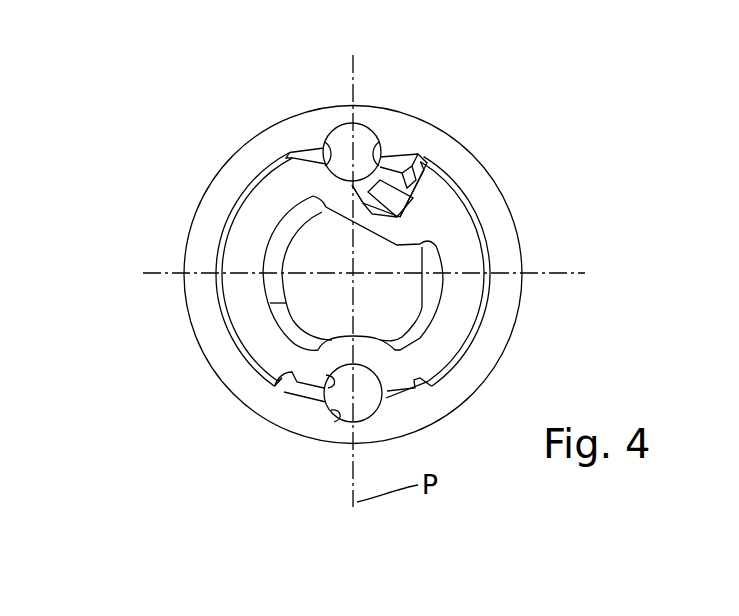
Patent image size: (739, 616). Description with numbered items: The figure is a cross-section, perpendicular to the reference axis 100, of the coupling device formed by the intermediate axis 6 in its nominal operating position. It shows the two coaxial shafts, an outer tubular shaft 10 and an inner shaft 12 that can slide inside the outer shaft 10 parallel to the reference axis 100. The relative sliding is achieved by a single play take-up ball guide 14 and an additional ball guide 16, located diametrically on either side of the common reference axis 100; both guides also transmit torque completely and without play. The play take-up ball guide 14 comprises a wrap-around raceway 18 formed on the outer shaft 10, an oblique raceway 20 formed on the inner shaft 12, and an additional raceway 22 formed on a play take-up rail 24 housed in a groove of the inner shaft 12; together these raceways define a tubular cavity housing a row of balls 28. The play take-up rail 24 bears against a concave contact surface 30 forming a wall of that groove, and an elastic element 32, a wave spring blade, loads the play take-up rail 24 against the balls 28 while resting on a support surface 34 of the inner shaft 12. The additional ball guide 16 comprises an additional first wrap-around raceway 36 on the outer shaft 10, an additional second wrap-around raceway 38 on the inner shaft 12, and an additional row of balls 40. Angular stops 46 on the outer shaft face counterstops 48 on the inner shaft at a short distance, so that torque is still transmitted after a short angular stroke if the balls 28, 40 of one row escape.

The intermediate axis 6 is at (117, 213).
The outer tubular shaft 10 is at (488, 333).
The inner shaft 12 is at (465, 248).
The play take-up ball guide 14 is at (243, 77).
The additional ball guide 16 is at (170, 400).
The wrap-around raceway 18 is at (337, 130).
The oblique raceway 20 is at (290, 157).
The additional raceway 22 is at (395, 177).
The play take-up rail 24 is at (400, 163).
The balls 28 is at (358, 145).
The contact surface 30 is at (417, 160).
The elastic element 32 is at (400, 210).
The support surface 34 is at (348, 186).
The additional first wrap-around raceway 36 is at (338, 410).
The additional second wrap-around raceway 38 is at (327, 396).
The additional row of balls 40 is at (340, 392).
The angular stops 46 is at (287, 148).
The counterstops 48 is at (285, 158).
The reference axis 100 is at (353, 277).